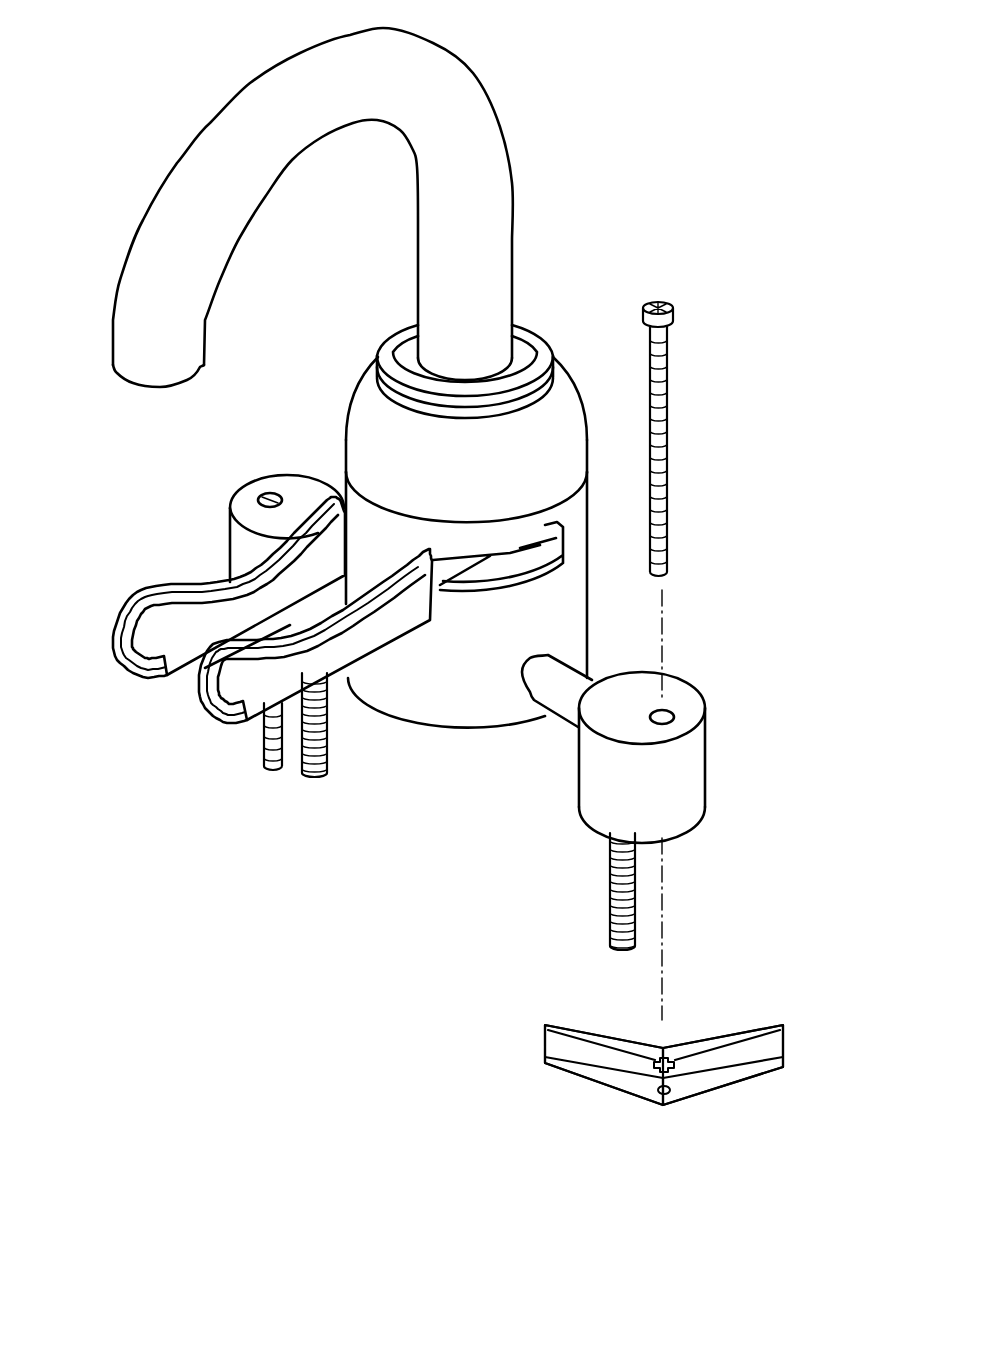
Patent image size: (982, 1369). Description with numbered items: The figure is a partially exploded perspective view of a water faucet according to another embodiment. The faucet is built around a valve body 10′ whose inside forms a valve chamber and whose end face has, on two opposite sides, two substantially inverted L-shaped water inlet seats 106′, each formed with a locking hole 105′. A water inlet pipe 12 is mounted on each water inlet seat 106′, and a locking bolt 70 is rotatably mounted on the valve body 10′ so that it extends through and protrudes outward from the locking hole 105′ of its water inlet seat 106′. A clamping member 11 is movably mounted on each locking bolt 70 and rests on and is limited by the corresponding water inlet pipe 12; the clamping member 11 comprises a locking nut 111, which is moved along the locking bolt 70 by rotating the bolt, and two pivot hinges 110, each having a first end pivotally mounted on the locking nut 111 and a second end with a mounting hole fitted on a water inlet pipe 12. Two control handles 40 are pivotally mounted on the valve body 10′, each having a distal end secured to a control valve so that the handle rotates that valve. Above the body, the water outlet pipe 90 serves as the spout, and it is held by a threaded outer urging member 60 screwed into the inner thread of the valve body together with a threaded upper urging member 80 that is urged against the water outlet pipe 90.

The water outlet pipe 90 is at (497, 97).
The threaded upper urging member 80 is at (552, 338).
The threaded outer urging member 60 is at (346, 382).
The valve body 10′ is at (420, 728).
The control handle 40 is at (112, 660).
The locking hole 105′ is at (262, 497).
The water inlet seat 106′ is at (600, 793).
The locking bolt 70 is at (670, 460).
The water inlet pipe 12 is at (300, 775).
The clamping member 11 is at (537, 1063).
The pivot hinge 110 is at (612, 1080).
The locking nut 111 is at (666, 1060).